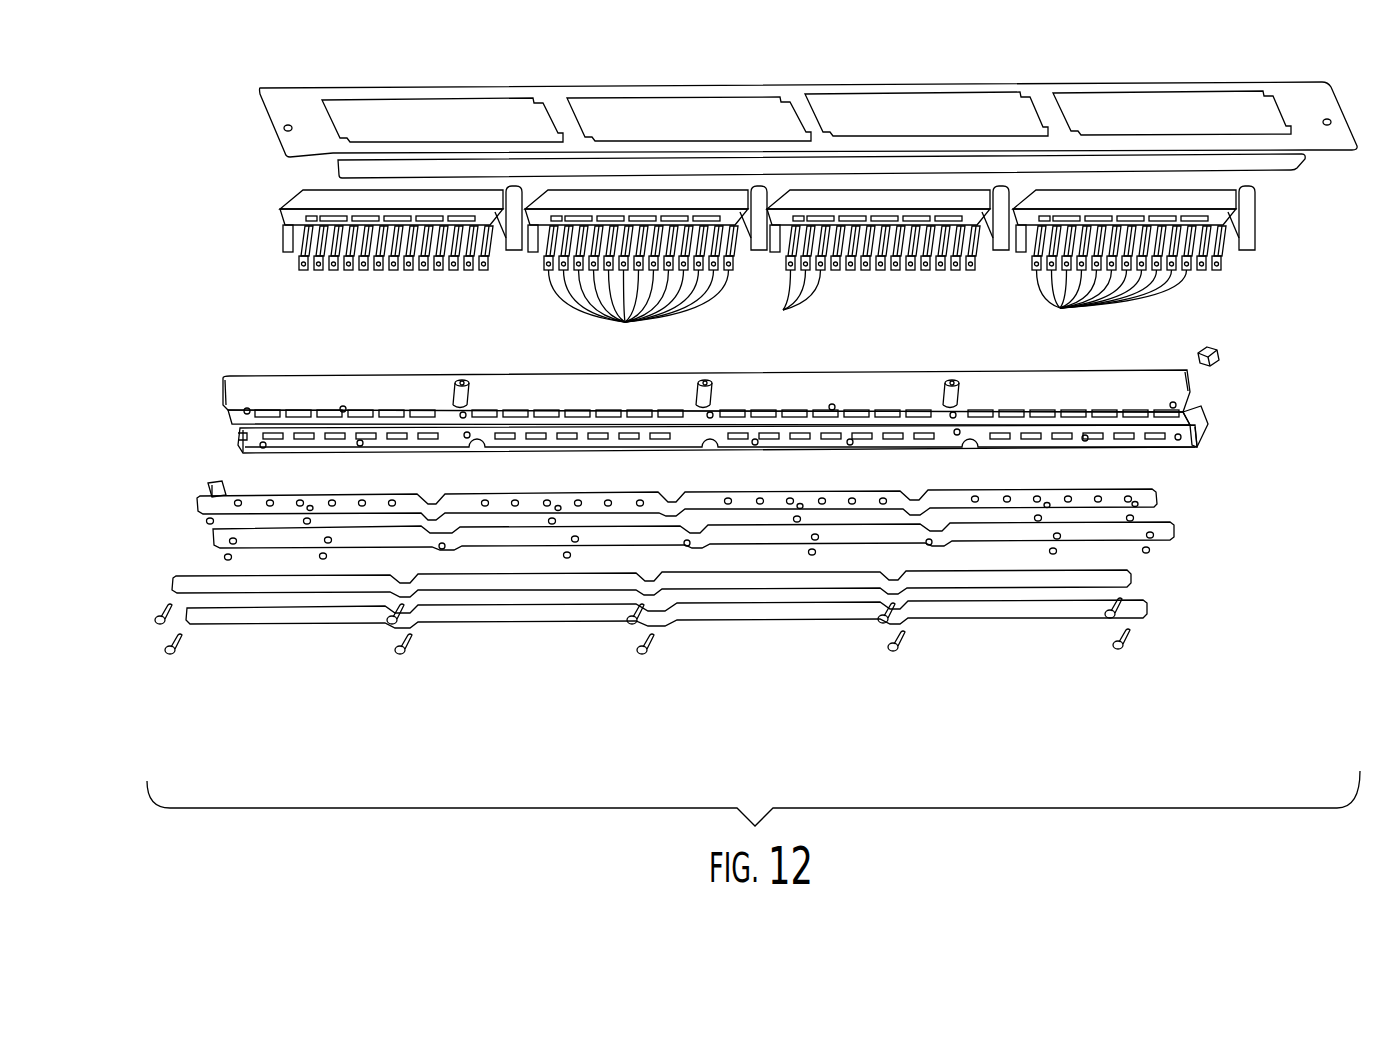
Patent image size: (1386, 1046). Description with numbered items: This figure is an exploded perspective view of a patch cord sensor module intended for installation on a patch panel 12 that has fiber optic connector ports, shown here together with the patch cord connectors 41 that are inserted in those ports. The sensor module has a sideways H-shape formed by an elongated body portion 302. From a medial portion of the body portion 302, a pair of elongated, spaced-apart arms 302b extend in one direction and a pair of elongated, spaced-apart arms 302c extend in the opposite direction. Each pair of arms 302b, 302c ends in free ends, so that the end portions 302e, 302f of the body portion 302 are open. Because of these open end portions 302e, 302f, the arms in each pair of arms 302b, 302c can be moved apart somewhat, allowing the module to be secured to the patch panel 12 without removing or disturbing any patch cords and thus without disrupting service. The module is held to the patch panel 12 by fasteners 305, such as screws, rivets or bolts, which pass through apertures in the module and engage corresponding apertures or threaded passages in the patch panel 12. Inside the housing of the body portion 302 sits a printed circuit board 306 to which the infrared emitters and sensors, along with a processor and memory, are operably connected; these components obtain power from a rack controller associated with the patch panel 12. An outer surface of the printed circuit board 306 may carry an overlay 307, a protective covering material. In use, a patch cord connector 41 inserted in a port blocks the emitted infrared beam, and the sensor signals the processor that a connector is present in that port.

The patch panel 12 is at (1262, 233).
The patch cord connector 41 is at (625, 322).
The body portion 302 is at (825, 385).
The arms 302b is at (232, 395).
The arms 302c is at (1187, 390).
The end portion 302e is at (240, 436).
The end portion 302f is at (1203, 412).
The fasteners 305 is at (645, 655).
The printed circuit board 306 is at (1160, 535).
The overlay 307 is at (668, 598).